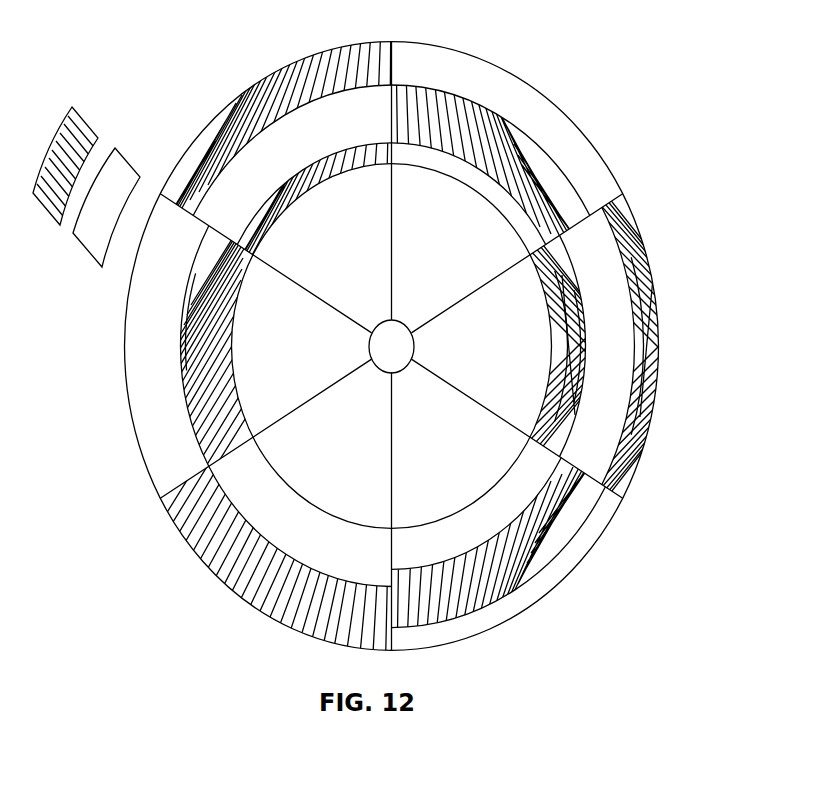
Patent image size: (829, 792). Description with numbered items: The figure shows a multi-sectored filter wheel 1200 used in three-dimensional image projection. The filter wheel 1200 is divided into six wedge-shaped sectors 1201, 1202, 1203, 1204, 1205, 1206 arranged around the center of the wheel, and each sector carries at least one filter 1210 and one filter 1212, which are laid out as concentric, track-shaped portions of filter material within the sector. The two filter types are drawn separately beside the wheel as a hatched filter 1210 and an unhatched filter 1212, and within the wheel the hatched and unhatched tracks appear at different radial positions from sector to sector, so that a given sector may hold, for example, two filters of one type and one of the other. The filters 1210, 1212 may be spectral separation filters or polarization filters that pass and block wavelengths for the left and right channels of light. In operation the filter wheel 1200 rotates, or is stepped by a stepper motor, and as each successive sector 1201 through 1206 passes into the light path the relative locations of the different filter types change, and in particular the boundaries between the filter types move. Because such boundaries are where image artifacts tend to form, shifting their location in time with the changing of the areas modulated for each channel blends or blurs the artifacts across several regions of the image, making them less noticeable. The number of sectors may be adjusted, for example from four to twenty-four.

The multi-sectored filter wheel 1200 is at (67, 527).
The sector 1201 is at (122, 331).
The sector 1202 is at (205, 588).
The sector 1203 is at (582, 595).
The sector 1204 is at (676, 341).
The sector 1205 is at (592, 100).
The sector 1206 is at (222, 100).
The filter 1210 is at (86, 115).
The filter 1212 is at (127, 157).